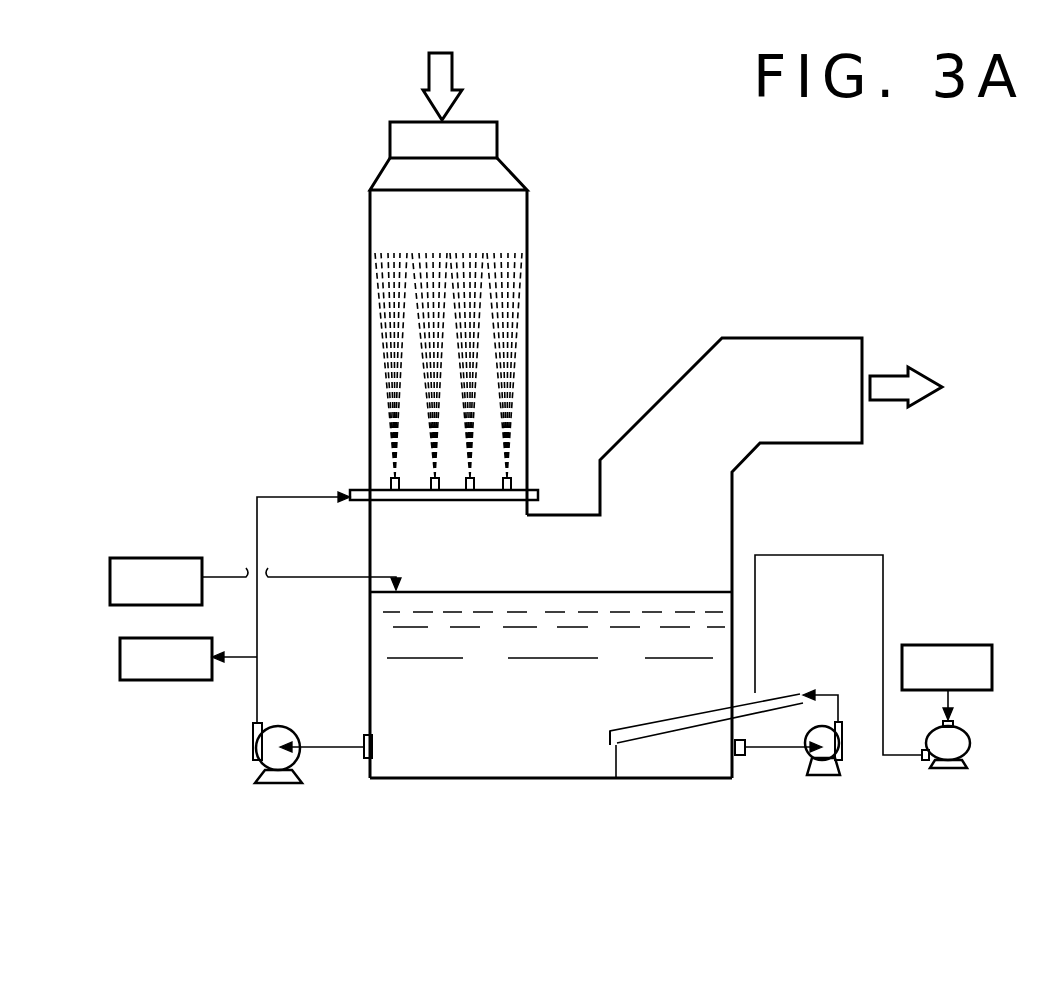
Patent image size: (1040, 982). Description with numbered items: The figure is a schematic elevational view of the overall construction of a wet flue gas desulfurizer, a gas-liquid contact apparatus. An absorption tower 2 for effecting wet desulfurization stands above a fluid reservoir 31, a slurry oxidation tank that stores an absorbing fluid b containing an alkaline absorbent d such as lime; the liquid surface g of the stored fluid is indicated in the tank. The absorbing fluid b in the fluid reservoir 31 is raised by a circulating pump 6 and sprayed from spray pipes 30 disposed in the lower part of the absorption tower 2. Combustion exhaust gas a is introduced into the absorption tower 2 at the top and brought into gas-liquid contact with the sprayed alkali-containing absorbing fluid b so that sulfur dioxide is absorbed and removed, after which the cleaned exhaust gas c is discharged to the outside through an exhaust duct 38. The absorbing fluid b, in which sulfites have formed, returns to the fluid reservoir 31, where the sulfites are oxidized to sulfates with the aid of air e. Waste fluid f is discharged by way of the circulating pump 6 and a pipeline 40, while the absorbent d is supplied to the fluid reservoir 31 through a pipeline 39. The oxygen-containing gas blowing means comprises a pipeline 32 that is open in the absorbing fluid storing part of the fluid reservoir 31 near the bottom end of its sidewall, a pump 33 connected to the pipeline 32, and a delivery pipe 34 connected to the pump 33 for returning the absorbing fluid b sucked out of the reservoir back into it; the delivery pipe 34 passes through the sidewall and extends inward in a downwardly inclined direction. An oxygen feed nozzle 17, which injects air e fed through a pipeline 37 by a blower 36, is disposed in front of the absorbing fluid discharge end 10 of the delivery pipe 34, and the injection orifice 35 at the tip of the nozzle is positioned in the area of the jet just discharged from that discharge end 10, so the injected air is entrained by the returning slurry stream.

The combustion exhaust gas a is at (452, 70).
The absorption tower 2 is at (527, 232).
The spray pipes 30 is at (350, 490).
The exhaust duct 38 is at (745, 338).
The cleaned exhaust gas c is at (925, 375).
The absorbing fluid b is at (432, 748).
The liquid surface g is at (512, 590).
The fluid reservoir 31 is at (368, 637).
The circulating pump 6 is at (265, 783).
The alkaline absorbent d is at (156, 581).
The pipeline 39 is at (305, 575).
The waste fluid f is at (166, 659).
The pipeline 40 is at (242, 660).
The delivery pipe 34 is at (778, 695).
The oxygen feed nozzle 17 is at (610, 735).
The absorbing fluid discharge end 10 is at (616, 745).
The injection orifice 35 is at (603, 752).
The pipeline 32 is at (765, 752).
The pump 33 is at (825, 775).
The pipeline 37 is at (886, 578).
The air e is at (947, 682).
The blower 36 is at (955, 770).